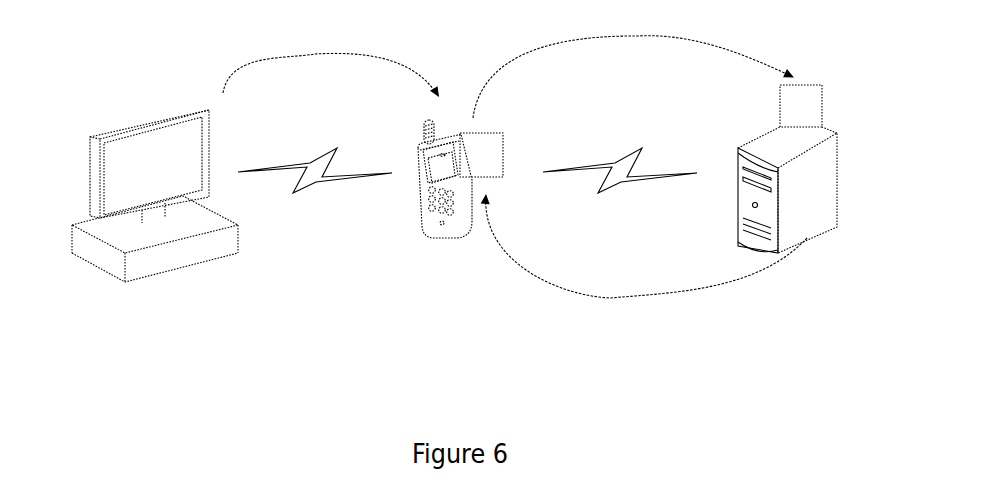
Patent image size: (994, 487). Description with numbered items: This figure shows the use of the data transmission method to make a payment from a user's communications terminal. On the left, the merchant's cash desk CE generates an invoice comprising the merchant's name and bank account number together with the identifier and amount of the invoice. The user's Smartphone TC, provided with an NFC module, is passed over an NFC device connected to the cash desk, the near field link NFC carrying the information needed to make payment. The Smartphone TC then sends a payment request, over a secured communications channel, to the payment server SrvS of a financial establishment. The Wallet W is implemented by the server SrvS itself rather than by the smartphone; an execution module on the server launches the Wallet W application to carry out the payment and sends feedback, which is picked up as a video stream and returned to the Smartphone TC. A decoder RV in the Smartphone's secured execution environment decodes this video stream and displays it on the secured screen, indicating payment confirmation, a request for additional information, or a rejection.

The cash desk CE is at (155, 214).
The Smartphone TC is at (445, 205).
The decoder RV is at (481, 155).
The NFC module NFC is at (315, 181).
The server SrvS is at (808, 195).
The Wallet W is at (801, 106).